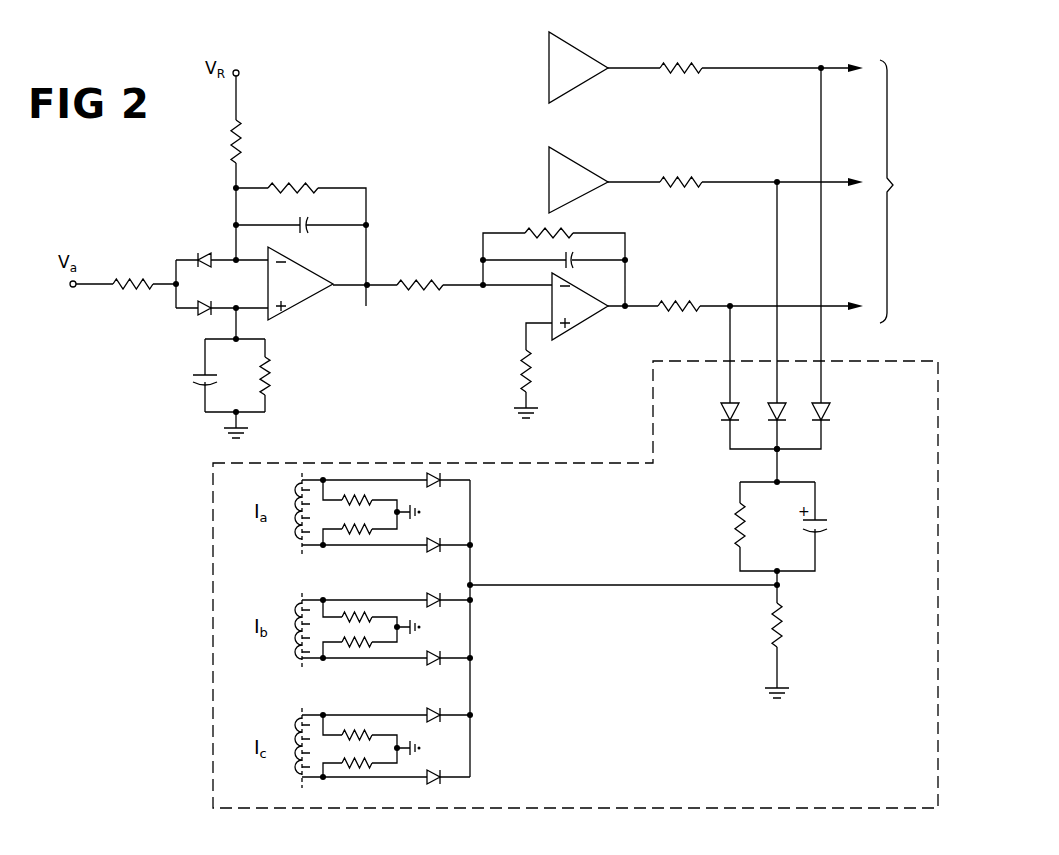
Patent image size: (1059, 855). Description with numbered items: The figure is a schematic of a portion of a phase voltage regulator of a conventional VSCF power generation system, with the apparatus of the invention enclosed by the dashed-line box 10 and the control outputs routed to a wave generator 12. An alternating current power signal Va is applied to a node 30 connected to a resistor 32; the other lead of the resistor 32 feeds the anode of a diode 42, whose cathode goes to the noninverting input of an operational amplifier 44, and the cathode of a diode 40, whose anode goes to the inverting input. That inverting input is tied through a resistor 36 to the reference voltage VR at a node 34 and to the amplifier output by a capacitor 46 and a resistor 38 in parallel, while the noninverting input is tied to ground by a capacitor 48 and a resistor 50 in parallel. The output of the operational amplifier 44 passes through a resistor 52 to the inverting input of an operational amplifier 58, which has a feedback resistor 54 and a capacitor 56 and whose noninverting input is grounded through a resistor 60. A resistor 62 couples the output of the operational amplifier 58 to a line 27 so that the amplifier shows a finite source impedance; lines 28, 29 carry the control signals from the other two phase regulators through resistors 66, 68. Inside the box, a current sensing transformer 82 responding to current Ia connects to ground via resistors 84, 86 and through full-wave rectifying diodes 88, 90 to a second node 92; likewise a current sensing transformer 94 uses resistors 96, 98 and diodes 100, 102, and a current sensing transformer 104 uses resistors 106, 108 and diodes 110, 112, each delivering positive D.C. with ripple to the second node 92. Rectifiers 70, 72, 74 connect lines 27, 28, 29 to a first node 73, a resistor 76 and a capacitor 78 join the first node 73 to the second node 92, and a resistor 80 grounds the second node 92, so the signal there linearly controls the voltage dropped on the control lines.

The dashed-line box 10 is at (204, 590).
The wave generator 12 is at (899, 191).
The line 27 is at (840, 300).
The line 28 is at (838, 178).
The line 29 is at (835, 64).
The node 30 is at (71, 289).
The resistor 32 is at (127, 275).
The node 34 is at (239, 72).
The resistor 36 is at (230, 140).
The resistor 38 is at (303, 189).
The diode 40 is at (203, 255).
The diode 42 is at (198, 317).
The operational amplifier 44 is at (304, 312).
The capacitor 46 is at (308, 230).
The capacitor 48 is at (196, 392).
The resistor 50 is at (268, 384).
The resistor 52 is at (420, 303).
The resistor 54 is at (530, 233).
The capacitor 56 is at (573, 265).
The operational amplifier 58 is at (583, 329).
The resistor 60 is at (522, 378).
The resistor 62 is at (672, 302).
The resistor 66 is at (686, 178).
The resistor 68 is at (680, 65).
The rectifier 70 is at (724, 411).
The rectifier 72 is at (772, 411).
The first node 73 is at (774, 453).
The rectifier 74 is at (817, 411).
The resistor 76 is at (733, 524).
The capacitor 78 is at (818, 533).
The resistor 80 is at (770, 632).
The current sensing transformer 82 is at (297, 500).
The resistor 84 is at (357, 496).
The resistor 86 is at (350, 532).
The diode 88 is at (430, 486).
The diode 90 is at (430, 548).
The second node 92 is at (781, 586).
The current sensing transformer 94 is at (297, 614).
The resistor 96 is at (364, 614).
The resistor 98 is at (357, 648).
The rectifier diode 100 is at (433, 597).
The rectifier diode 102 is at (427, 662).
The current sensing transformer 104 is at (297, 728).
The resistor 106 is at (354, 731).
The resistor 108 is at (355, 767).
The rectifier diode 110 is at (431, 712).
The rectifier diode 112 is at (430, 782).